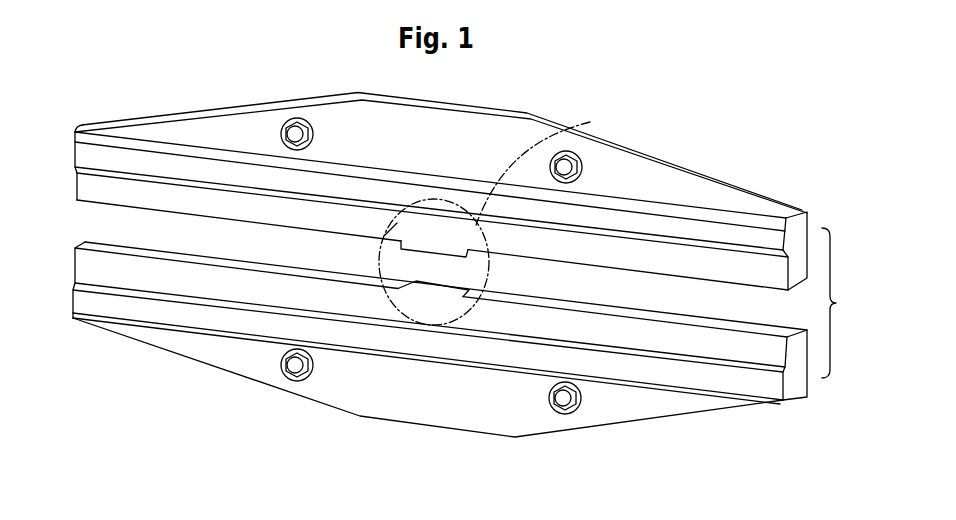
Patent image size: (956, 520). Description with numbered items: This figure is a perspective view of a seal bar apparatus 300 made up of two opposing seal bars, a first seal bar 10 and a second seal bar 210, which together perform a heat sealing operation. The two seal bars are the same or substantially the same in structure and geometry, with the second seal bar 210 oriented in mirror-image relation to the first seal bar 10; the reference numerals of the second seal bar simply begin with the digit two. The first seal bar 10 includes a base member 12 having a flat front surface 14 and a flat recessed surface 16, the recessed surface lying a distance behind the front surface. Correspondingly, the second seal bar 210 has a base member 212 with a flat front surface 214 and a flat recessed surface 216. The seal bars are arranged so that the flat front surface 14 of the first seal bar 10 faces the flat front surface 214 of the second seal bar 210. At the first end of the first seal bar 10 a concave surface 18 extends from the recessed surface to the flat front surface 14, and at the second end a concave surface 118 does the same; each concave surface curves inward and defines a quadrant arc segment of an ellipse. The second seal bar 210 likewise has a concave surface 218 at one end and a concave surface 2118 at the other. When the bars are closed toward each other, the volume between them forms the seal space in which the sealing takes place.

The seal bar apparatus 300 is at (454, 252).
The first seal bar 10 is at (768, 182).
The second seal bar 210 is at (735, 428).
The base member 12 is at (139, 109).
The base member 212 is at (126, 348).
The flat front surface 14 is at (454, 266).
The flat front surface 214 is at (280, 258).
The flat recessed surface 16 is at (437, 248).
The flat recessed surface 216 is at (441, 282).
The concave surface 18 is at (466, 250).
The concave surface 118 is at (401, 240).
The concave surface 218 is at (469, 291).
The concave surface 2118 is at (398, 289).